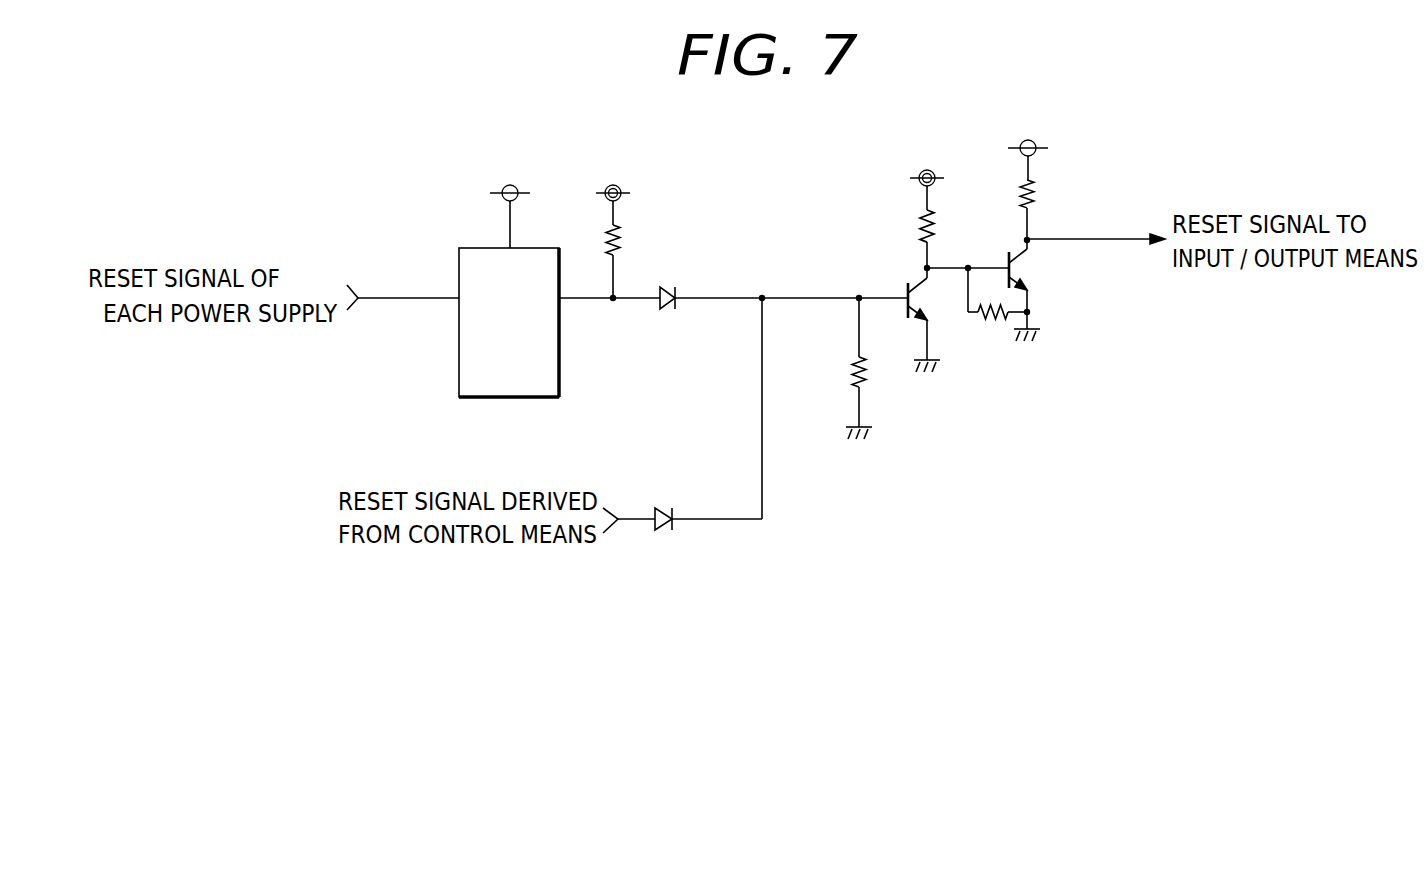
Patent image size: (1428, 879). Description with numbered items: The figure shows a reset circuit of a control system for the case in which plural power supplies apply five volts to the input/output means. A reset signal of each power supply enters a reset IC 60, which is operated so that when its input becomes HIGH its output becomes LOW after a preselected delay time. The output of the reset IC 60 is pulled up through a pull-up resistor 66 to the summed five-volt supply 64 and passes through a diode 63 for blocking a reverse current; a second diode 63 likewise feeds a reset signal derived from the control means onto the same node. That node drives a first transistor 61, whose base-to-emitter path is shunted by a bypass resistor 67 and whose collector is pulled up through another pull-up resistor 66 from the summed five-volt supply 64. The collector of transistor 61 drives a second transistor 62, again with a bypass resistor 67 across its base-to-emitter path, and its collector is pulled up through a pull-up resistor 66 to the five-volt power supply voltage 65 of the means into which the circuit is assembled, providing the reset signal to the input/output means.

The reset IC 60 is at (458, 378).
The transistor 61 is at (920, 296).
The transistor 62 is at (1030, 267).
The diode 63 is at (664, 290).
The Σ5V 64 is at (619, 187).
The power supply voltage of 5V 65 is at (517, 187).
The pull-up resistor 66 is at (619, 226).
The bypass resistor 67 is at (851, 358).